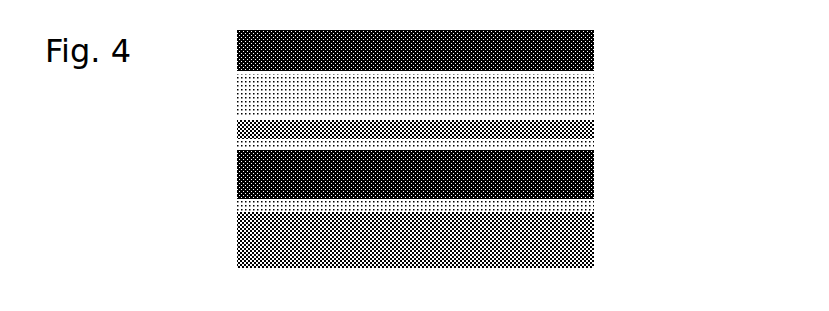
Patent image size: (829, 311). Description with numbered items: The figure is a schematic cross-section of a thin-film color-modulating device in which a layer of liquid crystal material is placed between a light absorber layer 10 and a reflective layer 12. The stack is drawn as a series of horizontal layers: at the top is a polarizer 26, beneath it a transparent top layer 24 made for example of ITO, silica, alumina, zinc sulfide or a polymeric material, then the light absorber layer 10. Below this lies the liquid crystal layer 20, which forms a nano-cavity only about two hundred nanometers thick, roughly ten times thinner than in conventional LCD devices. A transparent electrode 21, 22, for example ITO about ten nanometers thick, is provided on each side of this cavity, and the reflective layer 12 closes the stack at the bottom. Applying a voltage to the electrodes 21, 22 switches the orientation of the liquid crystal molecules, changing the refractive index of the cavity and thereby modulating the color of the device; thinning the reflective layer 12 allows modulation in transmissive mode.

The polarizer 26 is at (595, 52).
The transparent top layer 24 is at (597, 97).
The light absorber layer 10 is at (597, 125).
The transparent electrode 21 is at (597, 143).
The liquid crystal layer 20 is at (597, 172).
The transparent electrode 22 is at (595, 203).
The reflective layer 12 is at (595, 238).